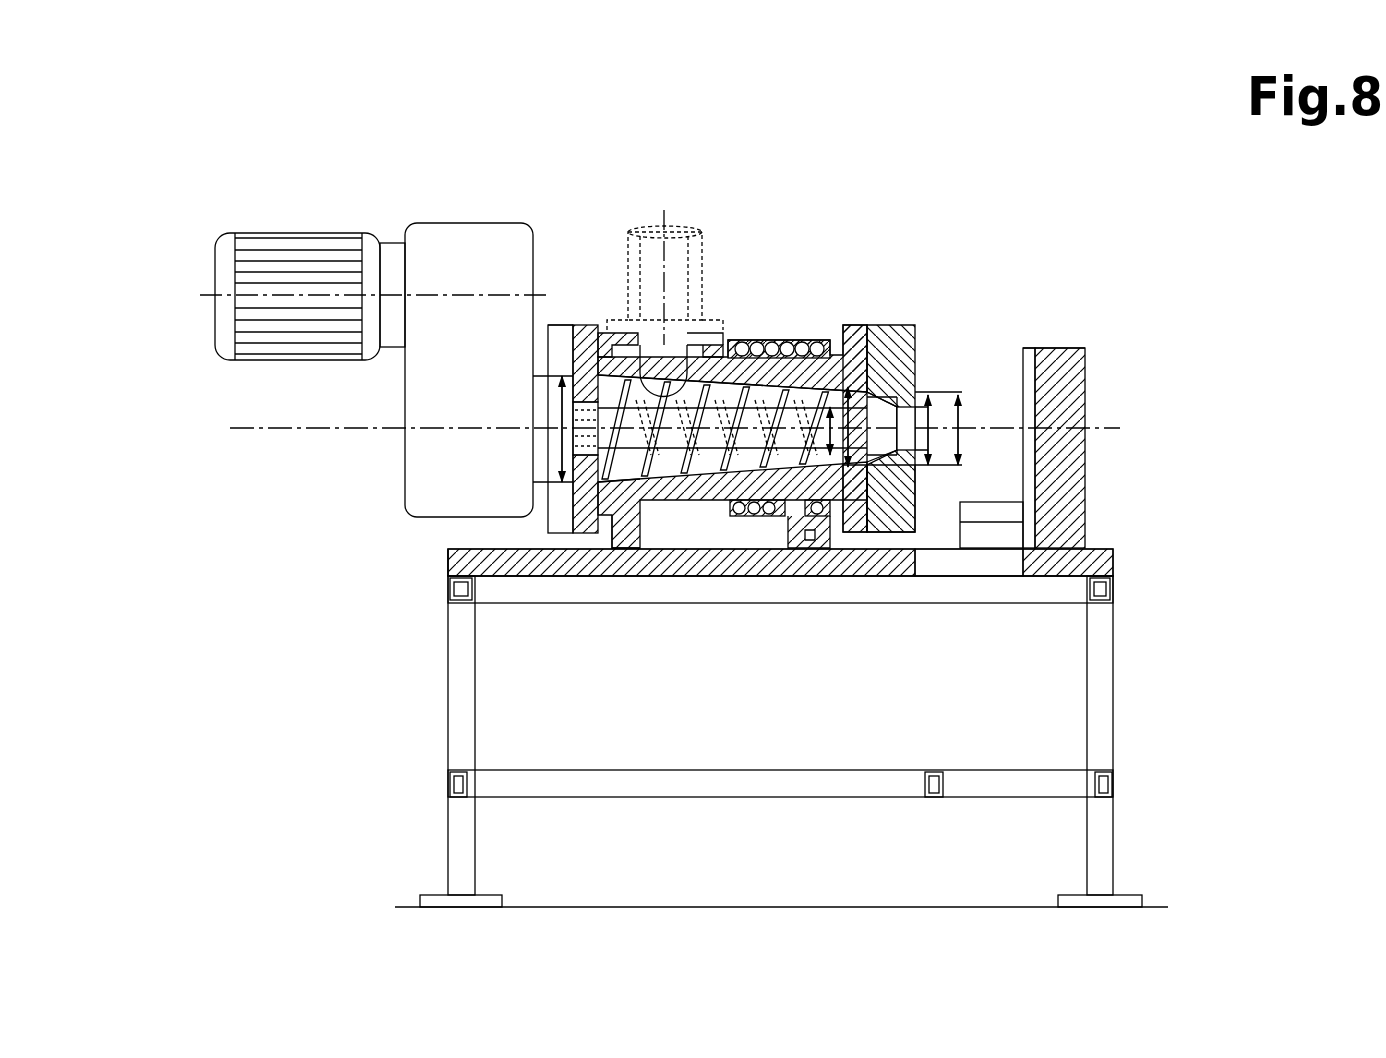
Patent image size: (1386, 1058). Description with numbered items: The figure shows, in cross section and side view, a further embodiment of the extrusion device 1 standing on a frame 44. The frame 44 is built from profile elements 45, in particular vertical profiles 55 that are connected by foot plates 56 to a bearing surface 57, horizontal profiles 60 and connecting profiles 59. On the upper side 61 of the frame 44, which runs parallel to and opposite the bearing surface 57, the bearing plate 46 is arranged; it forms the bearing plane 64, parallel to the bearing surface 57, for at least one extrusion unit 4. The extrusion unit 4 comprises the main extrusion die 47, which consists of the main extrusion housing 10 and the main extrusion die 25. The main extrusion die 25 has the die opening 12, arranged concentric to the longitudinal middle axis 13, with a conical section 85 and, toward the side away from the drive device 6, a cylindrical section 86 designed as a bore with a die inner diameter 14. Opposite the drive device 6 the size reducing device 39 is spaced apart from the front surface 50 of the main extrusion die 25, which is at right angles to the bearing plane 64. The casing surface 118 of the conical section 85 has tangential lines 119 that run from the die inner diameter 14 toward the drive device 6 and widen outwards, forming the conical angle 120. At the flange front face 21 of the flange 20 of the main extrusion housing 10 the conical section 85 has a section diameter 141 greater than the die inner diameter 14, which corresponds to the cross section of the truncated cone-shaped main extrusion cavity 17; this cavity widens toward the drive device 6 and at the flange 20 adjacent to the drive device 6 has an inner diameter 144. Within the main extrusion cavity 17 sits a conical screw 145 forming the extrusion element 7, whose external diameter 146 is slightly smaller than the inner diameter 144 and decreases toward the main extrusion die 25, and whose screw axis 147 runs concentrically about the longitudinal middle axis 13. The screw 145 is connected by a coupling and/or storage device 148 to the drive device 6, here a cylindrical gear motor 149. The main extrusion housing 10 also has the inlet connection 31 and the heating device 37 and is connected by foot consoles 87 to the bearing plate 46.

The extrusion device 1 is at (1050, 163).
The extrusion unit 4 is at (803, 233).
The drive device 6 is at (283, 224).
The extrusion element 7 is at (618, 472).
The main extrusion housing 10 is at (773, 323).
The die opening 12 is at (918, 352).
The longitudinal middle axis 13 is at (258, 430).
The die inner diameter 14 is at (930, 437).
The main extrusion cavity 17 is at (722, 372).
The flange 20 is at (570, 302).
The flange front face 21 is at (943, 363).
The main extrusion die 25 is at (900, 308).
The inlet connection 31 is at (668, 345).
The heating device 37 is at (748, 328).
The size reducing device 39 is at (1098, 303).
The frame 44 is at (412, 682).
The profile elements 45 is at (1100, 613).
The bearing plate 46 is at (637, 550).
The main extrusion die 47 is at (807, 292).
The front surface 50 is at (930, 348).
The vertical profiles 55 is at (1098, 715).
The foot plates 56 is at (485, 898).
The bearing surface 57 is at (1013, 903).
The connecting profiles 59 is at (720, 785).
The horizontal profiles 60 is at (748, 593).
The upper side 61 is at (1105, 552).
The bearing plane 64 is at (472, 550).
The conical section 85 is at (882, 484).
The cylindrical section 86 is at (905, 467).
The foot consoles 87 is at (610, 556).
The casing surface 118 is at (853, 550).
The tangential lines 119 is at (885, 300).
The conical angle 120 is at (823, 398).
The section diameter 141 is at (943, 428).
The inner diameter 144 is at (585, 378).
The screw 145 is at (666, 484).
The external diameter 146 is at (622, 487).
The screw axis 147 is at (725, 395).
The coupling and/or storage device 148 is at (592, 398).
The cylindrical gear motor 149 is at (390, 472).